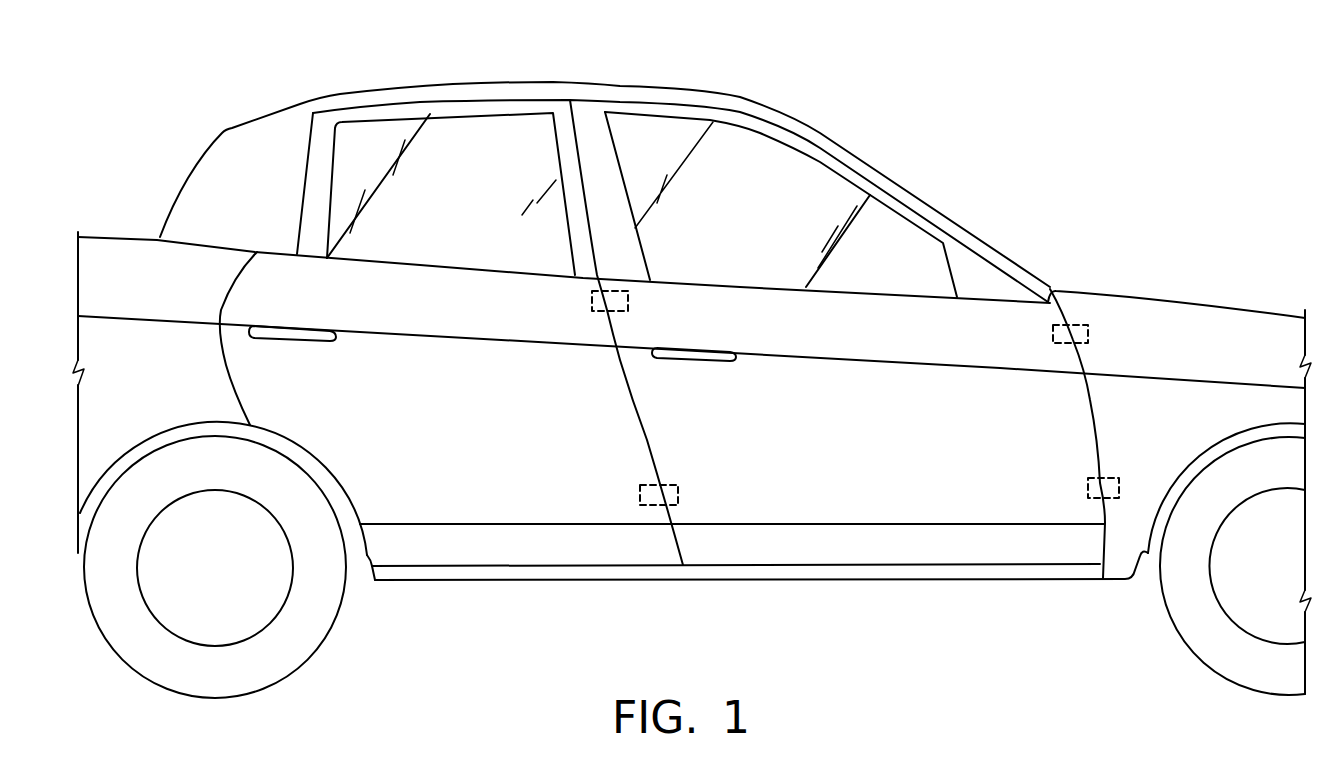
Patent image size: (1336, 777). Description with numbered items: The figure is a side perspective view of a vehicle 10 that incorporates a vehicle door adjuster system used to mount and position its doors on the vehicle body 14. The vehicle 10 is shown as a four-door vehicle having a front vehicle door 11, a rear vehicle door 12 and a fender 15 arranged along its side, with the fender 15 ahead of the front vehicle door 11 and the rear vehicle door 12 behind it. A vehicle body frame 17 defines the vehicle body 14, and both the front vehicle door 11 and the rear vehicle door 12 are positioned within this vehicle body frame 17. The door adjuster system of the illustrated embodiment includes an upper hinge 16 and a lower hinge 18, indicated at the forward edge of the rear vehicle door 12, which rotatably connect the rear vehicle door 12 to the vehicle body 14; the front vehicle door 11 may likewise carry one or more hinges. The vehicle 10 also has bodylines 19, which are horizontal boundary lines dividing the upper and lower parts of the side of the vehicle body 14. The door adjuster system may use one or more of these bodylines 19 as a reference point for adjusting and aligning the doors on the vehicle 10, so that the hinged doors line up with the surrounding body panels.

The vehicle 10 is at (1060, 122).
The front vehicle door 11 is at (877, 488).
The rear vehicle door 12 is at (518, 490).
The vehicle body 14 is at (137, 257).
The fender 15 is at (1195, 335).
The upper hinge 16 is at (628, 306).
The vehicle body frame 17 is at (628, 90).
The lower hinge 18 is at (670, 483).
The bodylines 19 is at (583, 277).